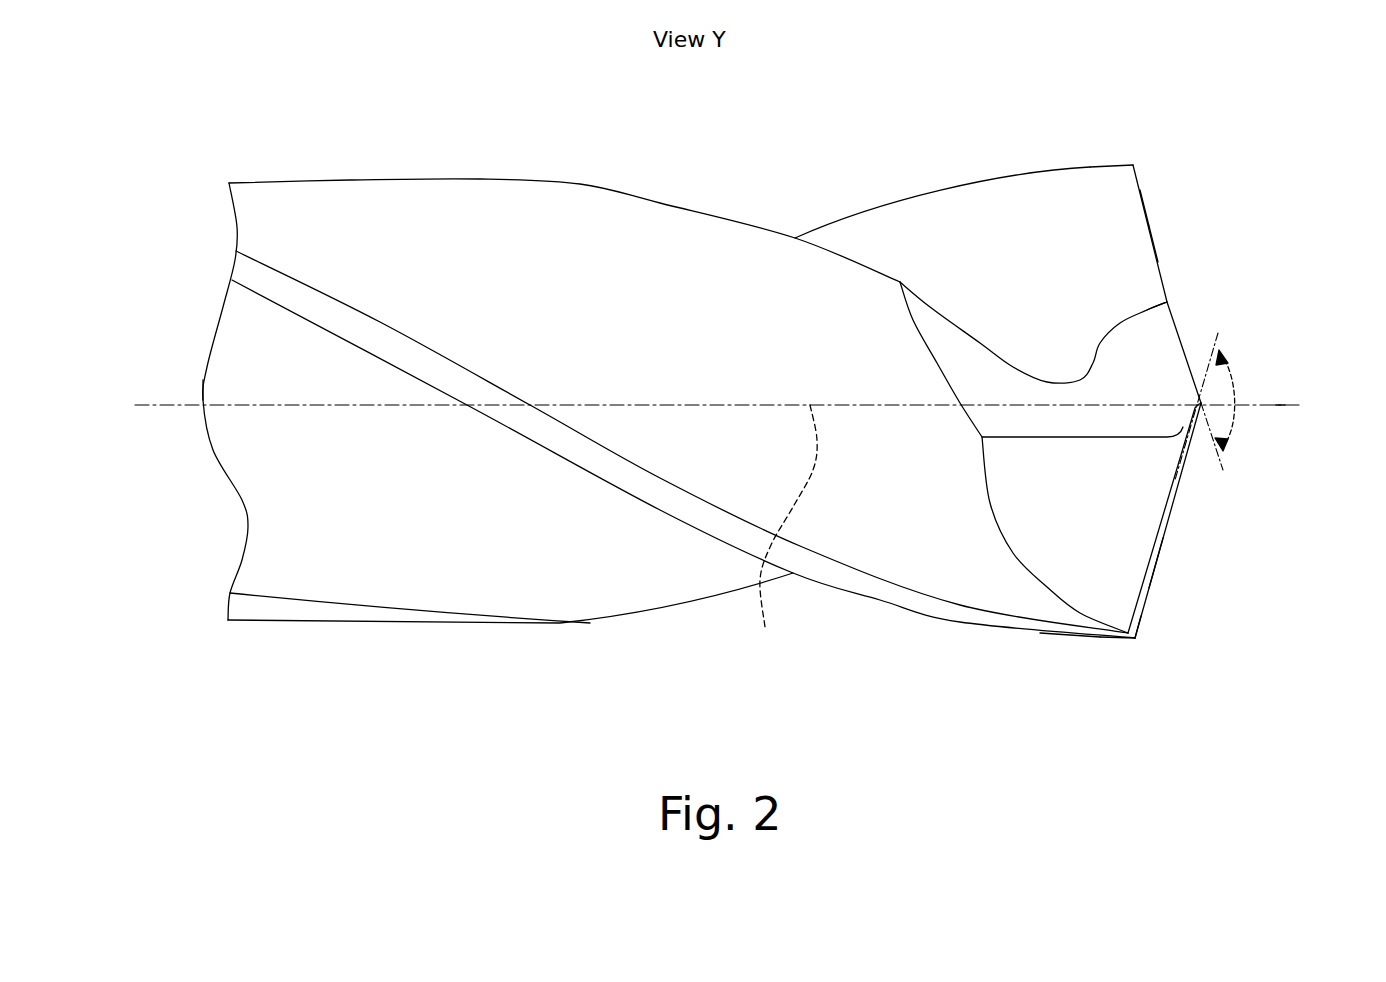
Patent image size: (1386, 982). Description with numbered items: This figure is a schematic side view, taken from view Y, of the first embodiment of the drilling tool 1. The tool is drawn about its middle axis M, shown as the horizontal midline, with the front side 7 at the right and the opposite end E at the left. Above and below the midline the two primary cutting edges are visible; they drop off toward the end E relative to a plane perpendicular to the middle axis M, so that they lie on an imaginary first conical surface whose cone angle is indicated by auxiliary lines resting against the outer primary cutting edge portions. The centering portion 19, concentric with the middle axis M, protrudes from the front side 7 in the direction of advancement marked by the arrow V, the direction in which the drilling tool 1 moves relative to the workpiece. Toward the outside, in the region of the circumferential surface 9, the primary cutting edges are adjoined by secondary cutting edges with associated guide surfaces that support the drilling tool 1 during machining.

The drilling tool 1 is at (953, 119).
The front side 7 is at (1156, 247).
The centering portion 19 is at (1214, 396).
The arrow indicating direction of advancement V is at (1280, 407).
The circumferential surface 9 is at (1073, 640).
The middle axis M is at (787, 530).
The end opposite the front side E is at (195, 356).